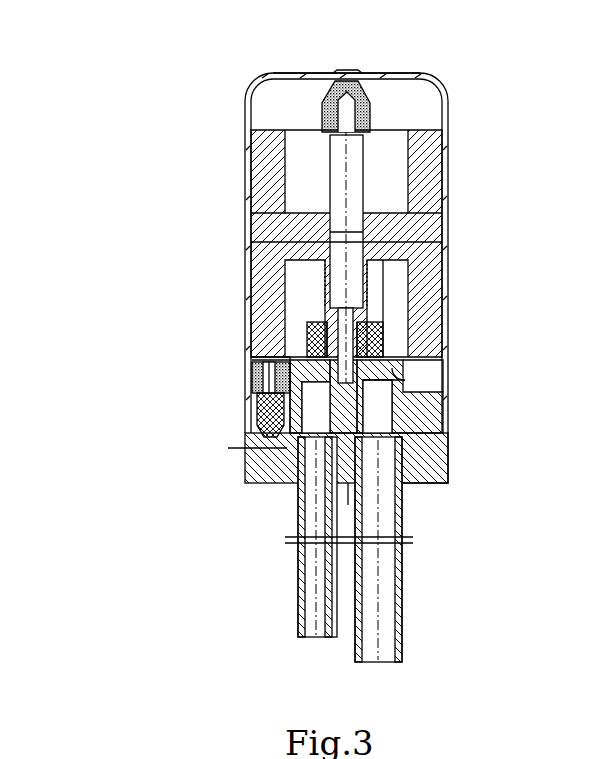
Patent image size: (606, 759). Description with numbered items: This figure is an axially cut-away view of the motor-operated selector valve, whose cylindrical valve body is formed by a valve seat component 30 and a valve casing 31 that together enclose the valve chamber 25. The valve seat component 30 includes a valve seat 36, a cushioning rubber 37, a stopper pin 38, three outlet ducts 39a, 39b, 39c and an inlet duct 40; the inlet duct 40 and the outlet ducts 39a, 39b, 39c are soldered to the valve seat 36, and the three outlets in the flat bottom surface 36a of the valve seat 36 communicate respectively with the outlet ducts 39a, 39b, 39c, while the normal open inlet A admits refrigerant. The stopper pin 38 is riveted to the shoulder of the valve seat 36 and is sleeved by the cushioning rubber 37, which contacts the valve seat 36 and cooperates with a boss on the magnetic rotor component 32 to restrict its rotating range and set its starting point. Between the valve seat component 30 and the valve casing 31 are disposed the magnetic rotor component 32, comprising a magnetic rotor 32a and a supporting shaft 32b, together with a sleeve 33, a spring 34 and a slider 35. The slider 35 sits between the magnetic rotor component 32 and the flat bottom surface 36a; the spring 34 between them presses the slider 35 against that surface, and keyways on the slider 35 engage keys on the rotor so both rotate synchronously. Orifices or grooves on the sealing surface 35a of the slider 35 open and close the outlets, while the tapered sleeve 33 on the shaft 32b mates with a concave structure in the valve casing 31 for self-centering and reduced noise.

The valve chamber 25 is at (252, 110).
The valve seat component 30 is at (420, 488).
The valve casing 31 is at (447, 390).
The magnetic rotor component 32 is at (425, 303).
The magnetic rotor 32a is at (390, 227).
The supporting shaft 32b is at (352, 192).
The sleeve 33 is at (358, 112).
The spring 34 is at (320, 270).
The slider 35 is at (310, 352).
The sealing surface 35a is at (304, 358).
The valve seat 36 is at (257, 462).
The flat bottom surface 36a is at (253, 333).
The cushioning rubber 37 is at (253, 372).
The stopper pin 38 is at (270, 403).
The outlet duct 39a is at (290, 510).
The outlet duct 39b is at (115, 613).
The outlet duct 39c is at (236, 551).
The inlet duct 40 is at (383, 580).
The normal open inlet A is at (367, 383).